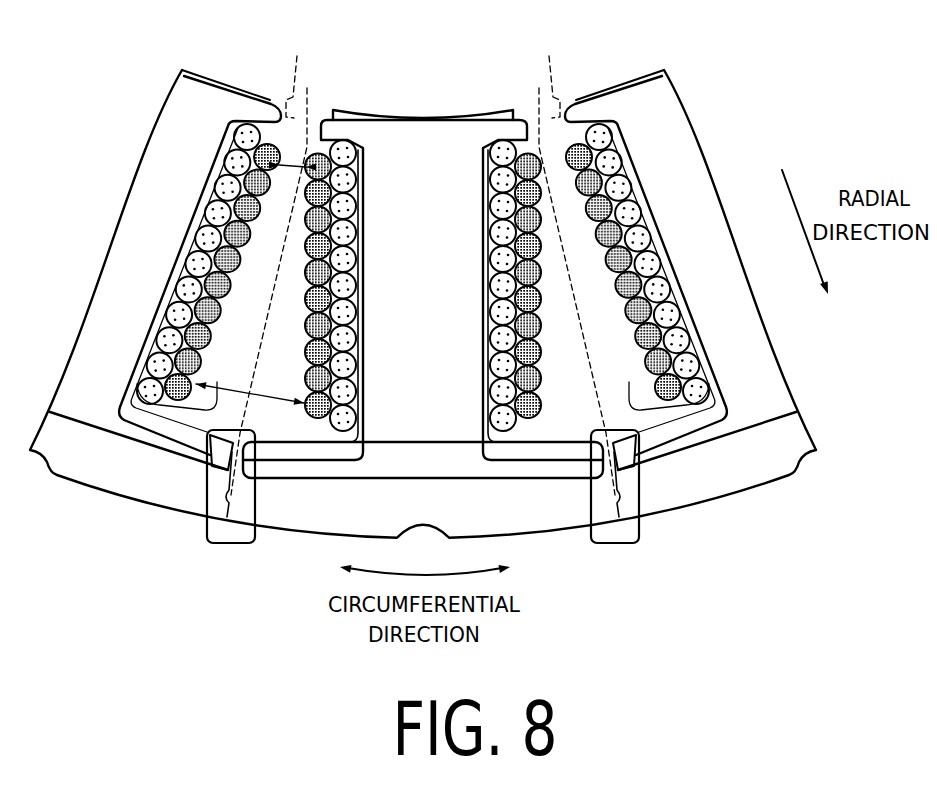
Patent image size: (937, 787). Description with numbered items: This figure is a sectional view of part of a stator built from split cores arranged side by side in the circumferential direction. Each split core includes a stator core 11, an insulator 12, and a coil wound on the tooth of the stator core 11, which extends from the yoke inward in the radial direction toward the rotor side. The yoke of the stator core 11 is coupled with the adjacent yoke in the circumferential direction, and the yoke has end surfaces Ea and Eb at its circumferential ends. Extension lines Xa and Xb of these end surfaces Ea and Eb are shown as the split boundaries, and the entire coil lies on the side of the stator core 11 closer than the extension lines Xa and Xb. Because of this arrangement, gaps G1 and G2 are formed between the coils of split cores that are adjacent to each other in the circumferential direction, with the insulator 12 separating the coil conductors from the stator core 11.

The stator core 11 is at (423, 112).
The insulator 12 is at (325, 119).
The extension line Xa is at (271, 261).
The extension line Xb is at (576, 261).
The gap G1 is at (196, 384).
The gap G2 is at (272, 165).
The end surface Ea is at (230, 543).
The end surface Eb is at (616, 543).